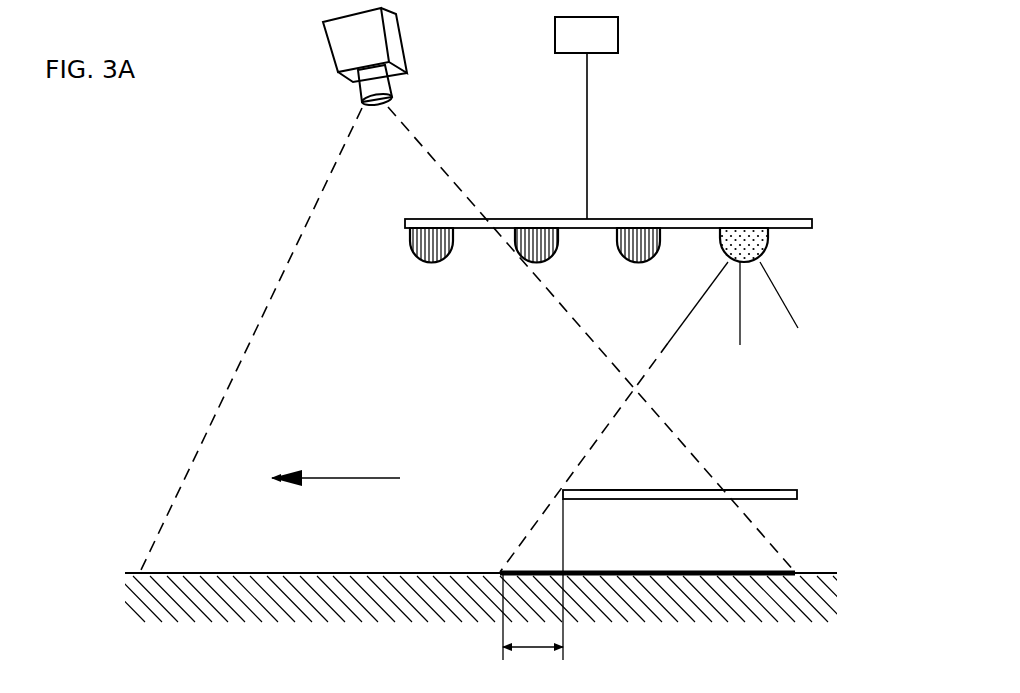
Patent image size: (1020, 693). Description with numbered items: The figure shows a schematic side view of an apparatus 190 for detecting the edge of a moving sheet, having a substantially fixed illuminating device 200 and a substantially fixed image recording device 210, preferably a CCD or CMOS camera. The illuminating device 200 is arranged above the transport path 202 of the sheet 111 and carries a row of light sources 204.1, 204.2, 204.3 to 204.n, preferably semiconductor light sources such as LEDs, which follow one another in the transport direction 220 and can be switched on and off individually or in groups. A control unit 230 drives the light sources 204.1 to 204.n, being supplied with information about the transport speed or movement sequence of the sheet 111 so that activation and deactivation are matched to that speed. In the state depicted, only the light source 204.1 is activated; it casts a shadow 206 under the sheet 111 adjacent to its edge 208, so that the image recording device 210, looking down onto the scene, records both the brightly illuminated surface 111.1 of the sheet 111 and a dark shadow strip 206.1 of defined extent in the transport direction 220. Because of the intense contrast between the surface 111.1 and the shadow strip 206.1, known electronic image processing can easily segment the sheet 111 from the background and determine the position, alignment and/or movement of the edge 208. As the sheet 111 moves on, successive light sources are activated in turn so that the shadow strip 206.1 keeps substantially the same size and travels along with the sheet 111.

The image recording device 210 is at (367, 32).
The control unit 230 is at (610, 33).
The illuminating device 200 is at (628, 140).
The light source 204.n is at (425, 234).
The light source 204.3 is at (528, 234).
The light source 204.2 is at (643, 237).
The light source 204.1 is at (743, 230).
The apparatus 190 is at (297, 203).
The transport path 202 is at (742, 438).
The transport direction 220 is at (385, 478).
The edge 208 is at (562, 490).
The sheet 111 is at (758, 490).
The surface 111.1 is at (627, 489).
The shadow 206 is at (743, 572).
The shadow strip 206.1 is at (532, 647).